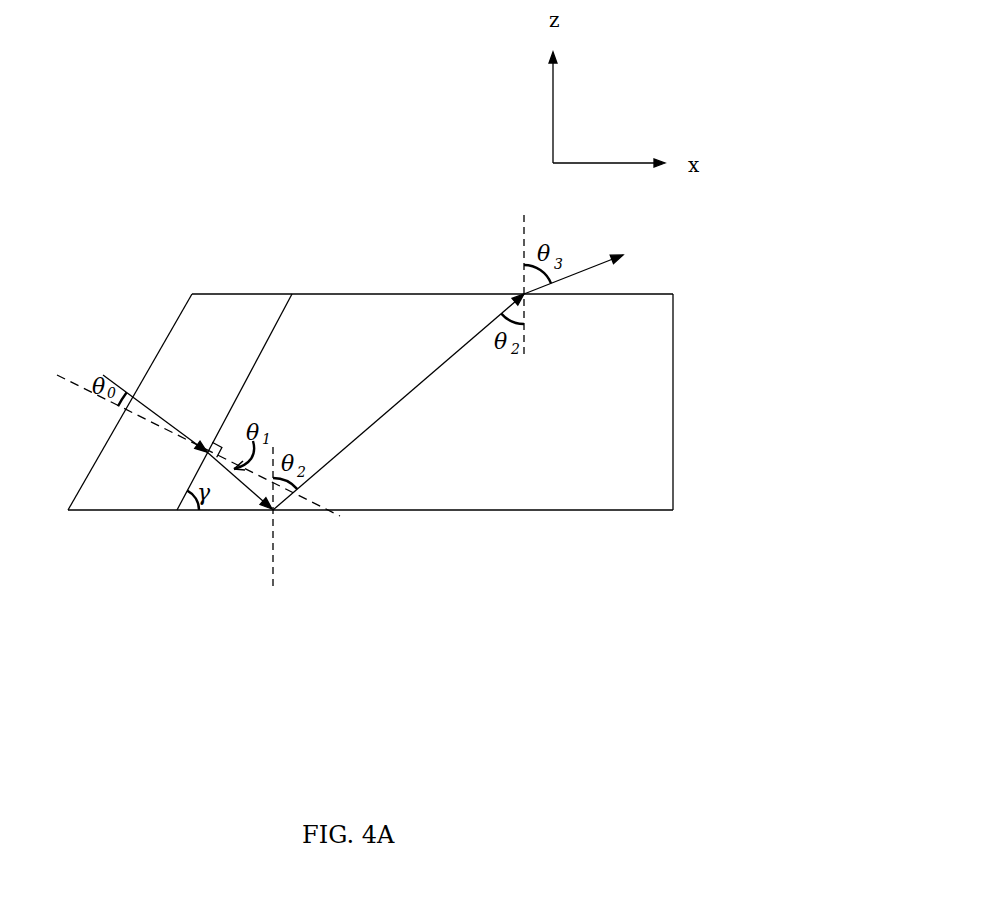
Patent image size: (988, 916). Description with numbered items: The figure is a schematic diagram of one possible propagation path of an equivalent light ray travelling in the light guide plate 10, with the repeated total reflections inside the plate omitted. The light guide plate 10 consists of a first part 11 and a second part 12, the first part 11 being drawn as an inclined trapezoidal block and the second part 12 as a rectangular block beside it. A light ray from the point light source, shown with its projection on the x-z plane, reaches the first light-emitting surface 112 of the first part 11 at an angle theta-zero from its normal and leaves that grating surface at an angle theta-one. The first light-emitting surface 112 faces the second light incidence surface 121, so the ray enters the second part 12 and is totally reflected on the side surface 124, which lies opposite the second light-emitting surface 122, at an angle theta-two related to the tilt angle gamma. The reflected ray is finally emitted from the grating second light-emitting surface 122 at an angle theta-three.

The light guide plate 10 is at (435, 577).
The first part 11 is at (130, 485).
The second part 12 is at (396, 493).
The first light-emitting surface 112 is at (256, 362).
The second light incidence surface 121 is at (234, 402).
The second light-emitting surface 122 is at (472, 293).
The side surface 124 is at (557, 510).